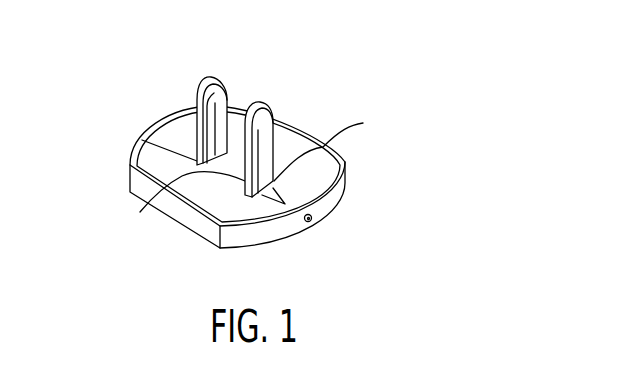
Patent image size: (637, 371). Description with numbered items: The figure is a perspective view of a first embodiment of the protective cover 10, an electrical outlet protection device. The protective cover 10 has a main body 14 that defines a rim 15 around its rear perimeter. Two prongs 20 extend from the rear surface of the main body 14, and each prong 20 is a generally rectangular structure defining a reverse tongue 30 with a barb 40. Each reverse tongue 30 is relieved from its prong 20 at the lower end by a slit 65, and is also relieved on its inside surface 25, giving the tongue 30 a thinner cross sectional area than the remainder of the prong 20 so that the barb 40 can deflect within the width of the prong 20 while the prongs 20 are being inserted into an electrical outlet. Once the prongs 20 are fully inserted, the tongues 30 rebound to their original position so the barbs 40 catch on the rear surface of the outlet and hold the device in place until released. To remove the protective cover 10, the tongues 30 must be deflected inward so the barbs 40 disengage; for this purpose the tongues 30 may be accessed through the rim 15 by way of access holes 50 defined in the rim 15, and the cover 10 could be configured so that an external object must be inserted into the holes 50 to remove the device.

The protective cover 10 is at (220, 158).
The main body 14 is at (310, 189).
The rim 15 is at (136, 133).
The prong 20 is at (208, 78).
The inside surface 25 is at (232, 98).
The reverse tongue 30 is at (363, 123).
The barb 40 is at (180, 186).
The access hole 50 is at (310, 222).
The slit 65 is at (264, 194).